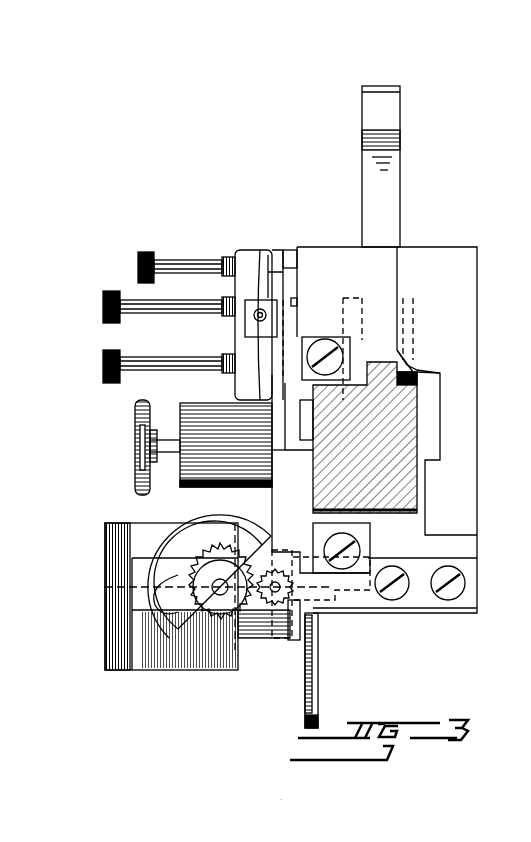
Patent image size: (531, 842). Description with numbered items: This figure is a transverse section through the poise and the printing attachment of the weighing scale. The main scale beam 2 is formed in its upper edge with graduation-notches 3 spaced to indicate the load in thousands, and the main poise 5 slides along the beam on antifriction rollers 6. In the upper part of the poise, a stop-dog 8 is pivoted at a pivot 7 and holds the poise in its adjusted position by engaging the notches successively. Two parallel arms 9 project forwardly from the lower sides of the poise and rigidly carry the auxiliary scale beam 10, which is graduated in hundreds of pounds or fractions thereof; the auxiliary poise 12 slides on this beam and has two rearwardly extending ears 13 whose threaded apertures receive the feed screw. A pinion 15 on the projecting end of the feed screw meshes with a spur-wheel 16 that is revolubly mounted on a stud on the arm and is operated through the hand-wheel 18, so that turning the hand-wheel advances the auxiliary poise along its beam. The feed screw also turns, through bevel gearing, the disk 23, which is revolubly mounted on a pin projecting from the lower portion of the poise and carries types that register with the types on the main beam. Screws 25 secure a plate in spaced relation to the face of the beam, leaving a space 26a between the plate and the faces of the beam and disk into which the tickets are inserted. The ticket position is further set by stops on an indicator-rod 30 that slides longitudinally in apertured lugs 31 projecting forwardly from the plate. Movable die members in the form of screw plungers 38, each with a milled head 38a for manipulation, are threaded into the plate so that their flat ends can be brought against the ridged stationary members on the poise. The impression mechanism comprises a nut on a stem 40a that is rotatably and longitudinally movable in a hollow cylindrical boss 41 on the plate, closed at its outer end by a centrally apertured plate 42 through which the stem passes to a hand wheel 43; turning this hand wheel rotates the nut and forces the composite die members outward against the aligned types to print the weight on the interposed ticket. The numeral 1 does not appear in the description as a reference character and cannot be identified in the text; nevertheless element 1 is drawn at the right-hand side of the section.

The base 1 is at (413, 397).
The main scale beam 2 is at (403, 423).
The graduation-notches 3 is at (413, 357).
The main poise 5 is at (478, 520).
The antifriction rollers 6 is at (420, 374).
The pivot 7 is at (290, 587).
The stop-dog 8 is at (402, 197).
The parallel arms 9 is at (367, 603).
The auxiliary scale beam 10 is at (150, 607).
The auxiliary poise 12 is at (105, 635).
The ears 13 is at (266, 633).
The pinion 15 is at (292, 641).
The spur-wheel 16 is at (210, 658).
The hand-wheel 18 is at (158, 548).
The disk 23 is at (320, 668).
The screws 25 is at (320, 340).
The space 26a is at (290, 250).
The indicator-rod 30 is at (266, 250).
The apertured lugs 31 is at (247, 250).
The screw plunger 38 is at (193, 262).
The milled head 38a is at (100, 367).
The stem 40a is at (150, 455).
The boss 41 is at (224, 487).
The plate 42 is at (178, 478).
The hand wheel 43 is at (135, 450).